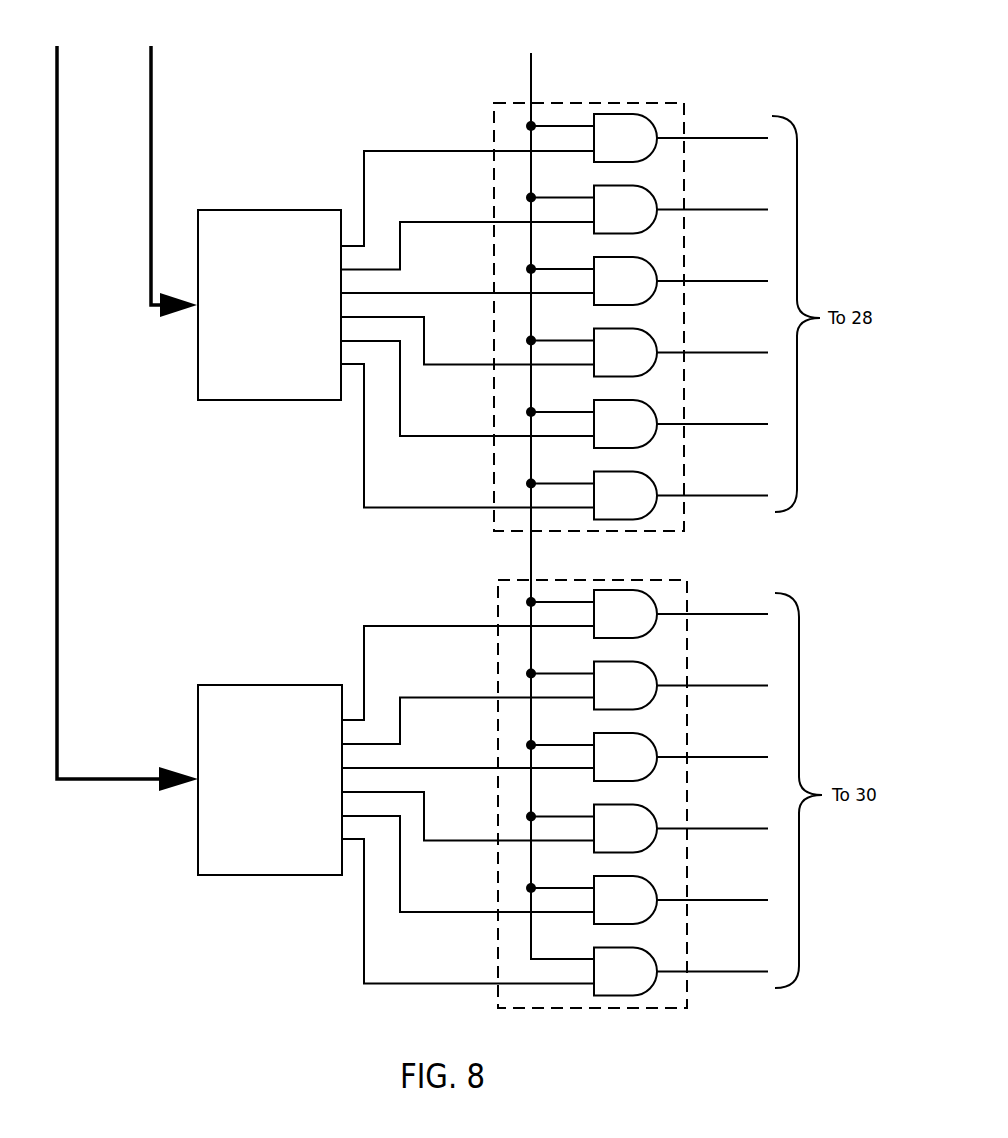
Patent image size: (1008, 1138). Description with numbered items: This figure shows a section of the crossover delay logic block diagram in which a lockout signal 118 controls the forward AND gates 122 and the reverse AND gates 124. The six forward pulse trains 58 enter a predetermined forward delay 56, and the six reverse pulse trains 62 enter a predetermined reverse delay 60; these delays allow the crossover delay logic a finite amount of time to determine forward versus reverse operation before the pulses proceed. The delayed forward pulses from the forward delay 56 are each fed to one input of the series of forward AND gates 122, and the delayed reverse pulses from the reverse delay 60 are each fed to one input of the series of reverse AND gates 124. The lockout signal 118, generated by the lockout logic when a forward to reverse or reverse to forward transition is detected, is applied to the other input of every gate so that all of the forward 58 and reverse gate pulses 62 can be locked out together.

The forward delay 56 is at (248, 210).
The forward pulse trains 58 is at (152, 143).
The reverse delay 60 is at (248, 685).
The reverse pulse trains 62 is at (58, 545).
The lockout signal 118 is at (532, 88).
The forward AND gates 122 is at (645, 100).
The reverse AND gates 124 is at (681, 584).